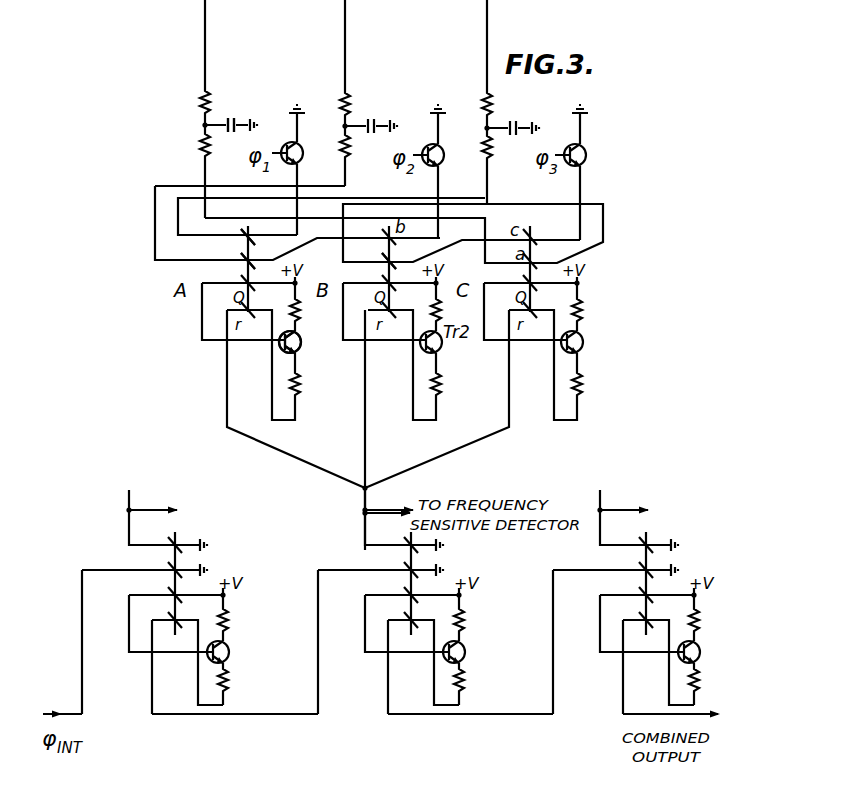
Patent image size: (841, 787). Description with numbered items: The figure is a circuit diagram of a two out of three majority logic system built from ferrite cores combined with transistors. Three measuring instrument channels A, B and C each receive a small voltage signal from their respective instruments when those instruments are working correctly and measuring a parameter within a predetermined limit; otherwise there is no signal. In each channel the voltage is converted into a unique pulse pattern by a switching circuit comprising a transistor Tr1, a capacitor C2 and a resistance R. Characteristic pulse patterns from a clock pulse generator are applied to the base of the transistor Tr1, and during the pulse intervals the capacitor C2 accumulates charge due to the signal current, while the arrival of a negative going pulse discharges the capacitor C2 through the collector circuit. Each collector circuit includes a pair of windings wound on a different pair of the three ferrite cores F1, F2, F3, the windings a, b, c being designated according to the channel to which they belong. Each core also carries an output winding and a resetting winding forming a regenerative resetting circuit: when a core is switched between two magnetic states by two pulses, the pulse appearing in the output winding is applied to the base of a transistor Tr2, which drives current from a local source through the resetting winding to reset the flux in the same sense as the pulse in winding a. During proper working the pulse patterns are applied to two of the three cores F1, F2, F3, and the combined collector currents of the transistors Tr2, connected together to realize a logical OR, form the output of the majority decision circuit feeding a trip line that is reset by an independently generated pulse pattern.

The measuring instrument channel A is at (205, 38).
The measuring instrument channel B is at (345, 38).
The measuring instrument channel C is at (487, 38).
The resistance R is at (202, 103).
The capacitor C2 is at (235, 118).
The transistor Tr1 is at (304, 155).
The transistor Tr2 is at (304, 337).
The ferrite core F1 is at (283, 357).
The ferrite core F2 is at (394, 388).
The ferrite core F3 is at (476, 357).
The winding a is at (241, 231).
The winding b is at (243, 255).
The winding c is at (396, 255).